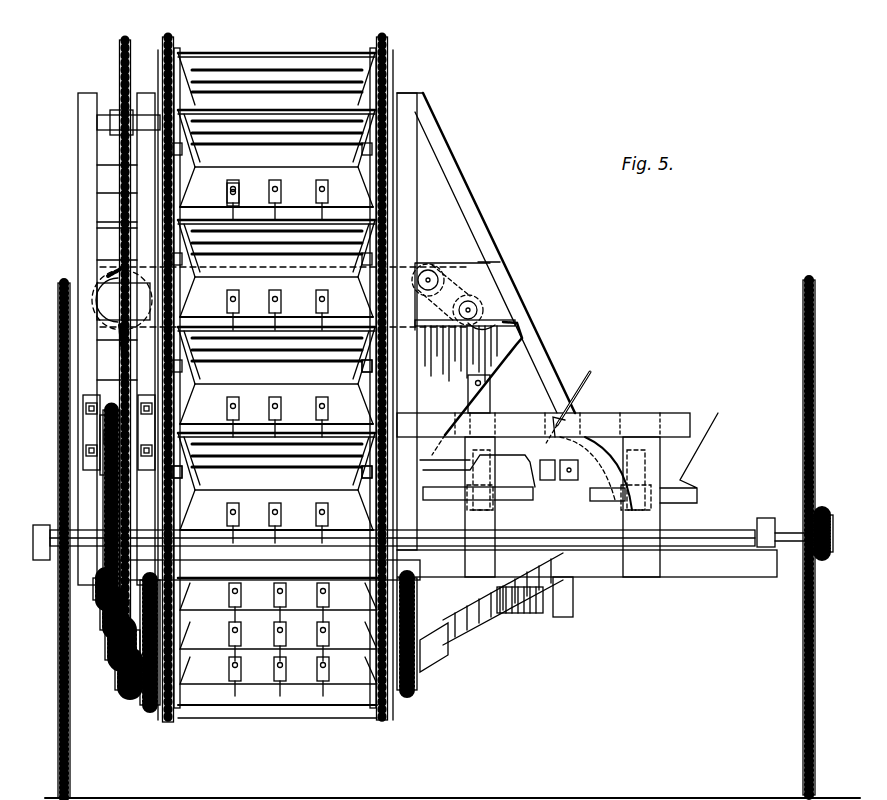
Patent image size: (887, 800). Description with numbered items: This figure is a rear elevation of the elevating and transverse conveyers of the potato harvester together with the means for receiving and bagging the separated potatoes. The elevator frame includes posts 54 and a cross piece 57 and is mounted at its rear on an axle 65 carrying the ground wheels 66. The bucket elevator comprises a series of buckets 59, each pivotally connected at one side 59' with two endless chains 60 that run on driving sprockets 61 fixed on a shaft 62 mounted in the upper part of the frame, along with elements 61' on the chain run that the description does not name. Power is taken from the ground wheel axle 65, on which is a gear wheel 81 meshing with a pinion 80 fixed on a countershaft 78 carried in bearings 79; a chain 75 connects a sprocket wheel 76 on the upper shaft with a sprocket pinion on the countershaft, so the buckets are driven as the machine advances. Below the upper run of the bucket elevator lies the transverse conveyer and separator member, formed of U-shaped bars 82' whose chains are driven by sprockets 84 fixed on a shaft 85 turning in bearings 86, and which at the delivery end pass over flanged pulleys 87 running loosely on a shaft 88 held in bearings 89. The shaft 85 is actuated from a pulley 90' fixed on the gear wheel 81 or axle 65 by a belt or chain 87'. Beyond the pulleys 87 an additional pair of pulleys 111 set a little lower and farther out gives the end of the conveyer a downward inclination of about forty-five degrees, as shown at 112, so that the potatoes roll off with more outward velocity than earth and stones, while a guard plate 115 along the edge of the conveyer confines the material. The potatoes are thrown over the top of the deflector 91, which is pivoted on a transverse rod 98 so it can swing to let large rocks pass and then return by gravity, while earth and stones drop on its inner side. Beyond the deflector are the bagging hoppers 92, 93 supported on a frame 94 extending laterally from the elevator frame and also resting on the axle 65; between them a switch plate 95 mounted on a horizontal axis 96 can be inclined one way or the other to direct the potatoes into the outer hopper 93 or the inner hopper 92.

The post 54 is at (145, 195).
The cross piece 57 is at (712, 577).
The bucket 59 is at (273, 298).
The bucket side 59' is at (272, 191).
The endless chain 60 is at (167, 55).
The driving sprocket 61 is at (276, 365).
The chain bracket 61' is at (272, 420).
The shaft 62 is at (105, 115).
The axle 65 is at (730, 528).
The ground wheel 66 is at (70, 748).
The chain 75 is at (125, 228).
The sprocket wheel 76 is at (125, 42).
The countershaft 78 is at (100, 433).
The bearing 79 is at (85, 423).
The pinion 80 is at (104, 440).
The gear wheel 81 is at (105, 487).
The U-shaped bar 82' is at (285, 297).
The sprocket 84 is at (110, 280).
The shaft 85 is at (120, 305).
The bearing 86 is at (118, 300).
The flanged pulley 87 is at (451, 281).
The belt or chain 87' is at (79, 355).
The shaft 88 is at (452, 310).
The bearing 89 is at (443, 270).
The pulley 90' is at (270, 639).
The deflector 91 is at (520, 343).
The bagging hopper 92 is at (428, 443).
The bagging hopper 93 is at (692, 440).
The frame 94 is at (612, 421).
The switch plate 95 is at (588, 372).
The horizontal axis 96 is at (578, 412).
The transverse rod 98 is at (481, 384).
The pulley 111 is at (493, 318).
The inclined end 112 is at (490, 263).
The guard plate 115 is at (487, 283).